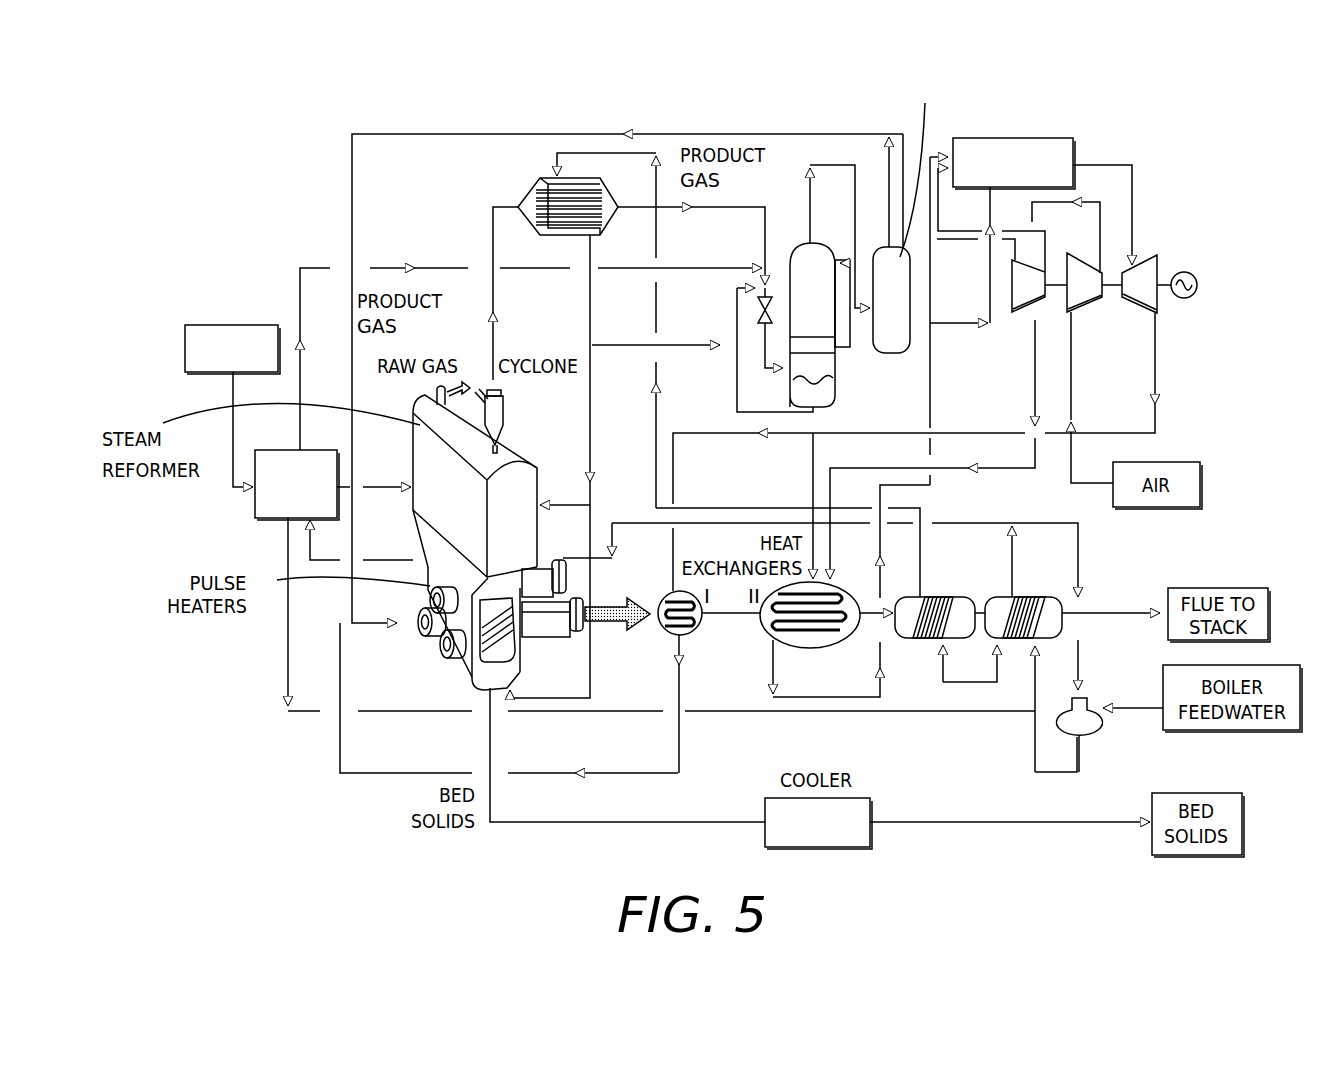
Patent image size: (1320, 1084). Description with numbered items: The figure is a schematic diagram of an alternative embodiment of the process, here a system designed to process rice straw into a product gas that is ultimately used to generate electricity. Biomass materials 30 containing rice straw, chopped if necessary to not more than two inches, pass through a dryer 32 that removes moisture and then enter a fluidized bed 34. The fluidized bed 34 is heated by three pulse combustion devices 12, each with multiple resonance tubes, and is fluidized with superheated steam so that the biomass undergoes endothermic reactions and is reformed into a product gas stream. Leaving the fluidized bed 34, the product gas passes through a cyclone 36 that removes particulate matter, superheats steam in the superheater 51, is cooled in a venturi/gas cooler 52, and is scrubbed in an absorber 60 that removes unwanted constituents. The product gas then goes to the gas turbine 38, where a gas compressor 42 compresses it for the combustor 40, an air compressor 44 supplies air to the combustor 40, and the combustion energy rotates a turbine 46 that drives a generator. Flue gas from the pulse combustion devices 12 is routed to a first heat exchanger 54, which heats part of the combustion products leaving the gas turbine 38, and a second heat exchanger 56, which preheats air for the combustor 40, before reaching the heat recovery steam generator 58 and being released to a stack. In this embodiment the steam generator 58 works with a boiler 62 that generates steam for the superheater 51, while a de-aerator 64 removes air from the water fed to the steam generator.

The pulse combustion devices 12 is at (420, 636).
The biomass feed 30 is at (228, 325).
The dryer 32 is at (255, 515).
The fluidized bed 34 is at (412, 460).
The cyclone 36 is at (503, 410).
The gas turbine 38 is at (1125, 272).
The combustor 40 is at (1075, 142).
The gas compressor 42 is at (1015, 315).
The air compressor 44 is at (1088, 303).
The turbine 46 is at (1160, 310).
The superheater 51 is at (544, 235).
The venturi/gas cooler 52 is at (835, 357).
The first heat exchanger 54 is at (688, 636).
The second heat exchanger 56 is at (838, 648).
The heat recovery steam generator 58 is at (1063, 618).
The absorber 60 is at (878, 245).
The boiler 62 is at (910, 640).
The de-aerator 64 is at (1090, 703).